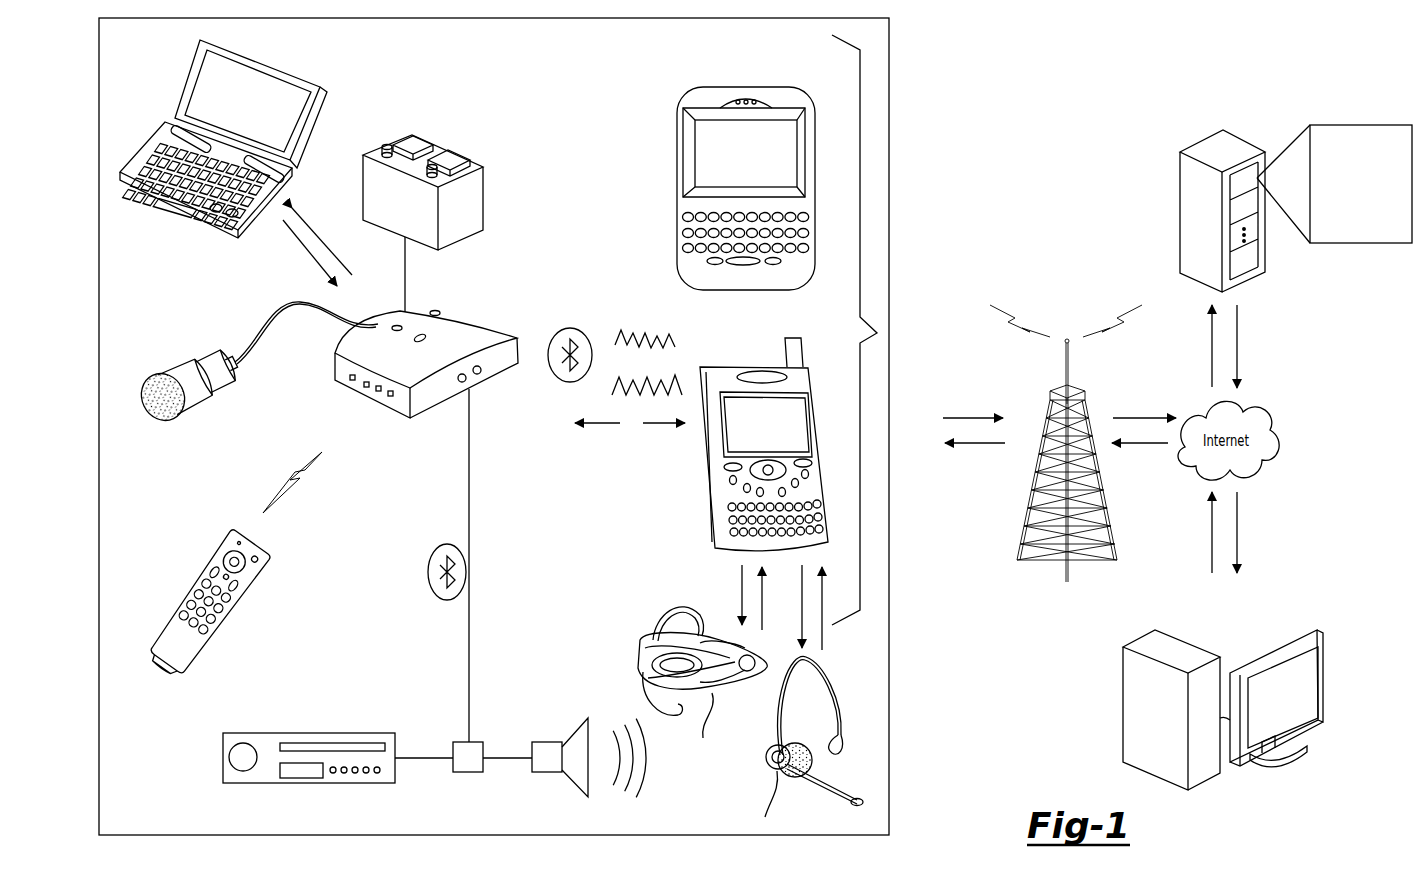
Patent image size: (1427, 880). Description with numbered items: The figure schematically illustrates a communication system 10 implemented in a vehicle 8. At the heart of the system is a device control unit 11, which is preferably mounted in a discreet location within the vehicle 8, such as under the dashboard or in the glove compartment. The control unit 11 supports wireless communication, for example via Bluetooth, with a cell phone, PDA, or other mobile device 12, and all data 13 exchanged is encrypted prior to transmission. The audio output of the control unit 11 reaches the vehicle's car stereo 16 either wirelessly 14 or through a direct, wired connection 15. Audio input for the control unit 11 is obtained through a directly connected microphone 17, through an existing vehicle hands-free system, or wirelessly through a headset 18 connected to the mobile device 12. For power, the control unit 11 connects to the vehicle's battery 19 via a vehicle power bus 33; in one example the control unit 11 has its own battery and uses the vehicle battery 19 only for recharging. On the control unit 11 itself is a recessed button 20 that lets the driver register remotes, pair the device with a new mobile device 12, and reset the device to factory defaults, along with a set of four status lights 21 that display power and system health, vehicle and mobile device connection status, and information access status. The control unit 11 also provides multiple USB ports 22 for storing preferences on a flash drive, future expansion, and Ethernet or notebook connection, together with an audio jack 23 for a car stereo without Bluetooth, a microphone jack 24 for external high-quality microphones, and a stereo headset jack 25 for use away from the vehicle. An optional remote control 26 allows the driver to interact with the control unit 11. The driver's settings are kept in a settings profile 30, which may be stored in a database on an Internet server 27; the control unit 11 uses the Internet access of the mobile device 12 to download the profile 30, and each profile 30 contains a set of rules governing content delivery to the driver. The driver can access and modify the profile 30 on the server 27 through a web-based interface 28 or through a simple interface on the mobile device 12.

The vehicle 8 is at (100, 190).
The communication system 10 is at (90, 125).
The device control unit 11 is at (403, 365).
The mobile communication device 12 is at (720, 292).
The data 13 is at (646, 322).
The wireless transmission 14 is at (428, 573).
The wired connection 15 is at (470, 630).
The car stereo 16 is at (223, 767).
The microphone 17 is at (188, 363).
The headset 18 is at (763, 767).
The vehicle battery 19 is at (473, 203).
The recessed button 20 is at (436, 311).
The status lights 21 is at (396, 326).
The USB ports 22 is at (350, 378).
The audio jack 23 is at (364, 385).
The microphone jack 24 is at (376, 389).
The stereo headset jack 25 is at (388, 394).
The remote control 26 is at (200, 643).
The Internet server 27 is at (1188, 230).
The web-based interface 28 is at (1302, 698).
The settings profile 30 is at (1365, 243).
The vehicle power bus 33 is at (404, 250).